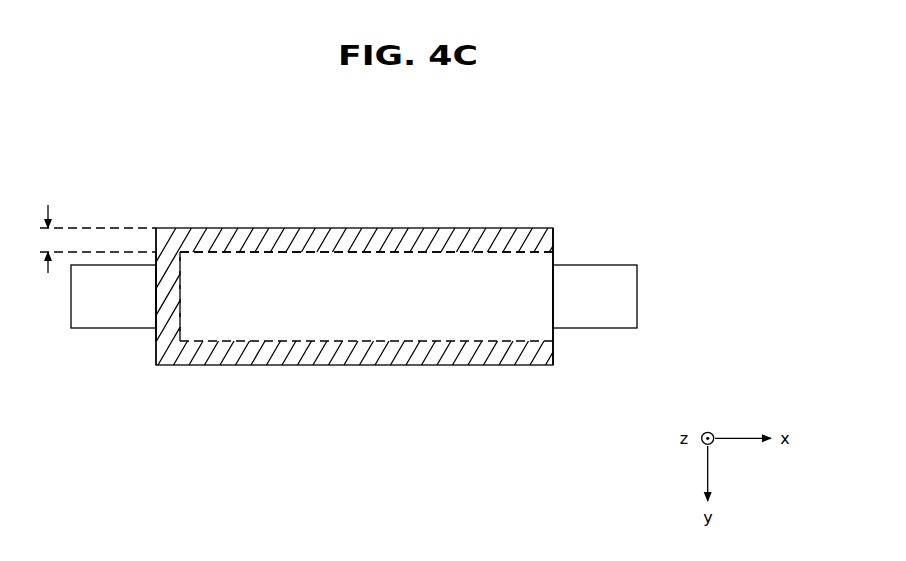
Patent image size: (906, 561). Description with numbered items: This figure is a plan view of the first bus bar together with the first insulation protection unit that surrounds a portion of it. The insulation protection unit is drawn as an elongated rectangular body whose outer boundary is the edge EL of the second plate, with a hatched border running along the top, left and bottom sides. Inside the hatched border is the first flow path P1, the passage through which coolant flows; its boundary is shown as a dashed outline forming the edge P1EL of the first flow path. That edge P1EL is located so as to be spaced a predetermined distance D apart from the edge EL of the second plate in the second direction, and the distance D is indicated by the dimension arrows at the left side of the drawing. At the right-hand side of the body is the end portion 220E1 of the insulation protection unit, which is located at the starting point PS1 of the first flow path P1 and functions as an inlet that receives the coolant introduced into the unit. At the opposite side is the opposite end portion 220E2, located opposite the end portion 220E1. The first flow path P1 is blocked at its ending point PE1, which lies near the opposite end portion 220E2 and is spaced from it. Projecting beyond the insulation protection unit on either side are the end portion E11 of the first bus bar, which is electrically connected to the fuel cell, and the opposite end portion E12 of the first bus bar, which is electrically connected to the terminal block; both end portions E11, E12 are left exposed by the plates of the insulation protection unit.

The edge of the second plate EL is at (393, 228).
The first flow path P1 is at (316, 276).
The edge of the first flow path P1EL is at (236, 259).
The starting point of the first flow path PS1 is at (553, 288).
The end portion of the first insulation protection unit 220E1 is at (553, 240).
The opposite end portion of the first insulation protection unit 220E2 is at (156, 242).
The ending point of the first flow path PE1 is at (181, 313).
The end portion of the first bus bar E11 is at (103, 311).
The opposite end portion of the first bus bar E12 is at (606, 311).
The predetermined distance D is at (91, 239).